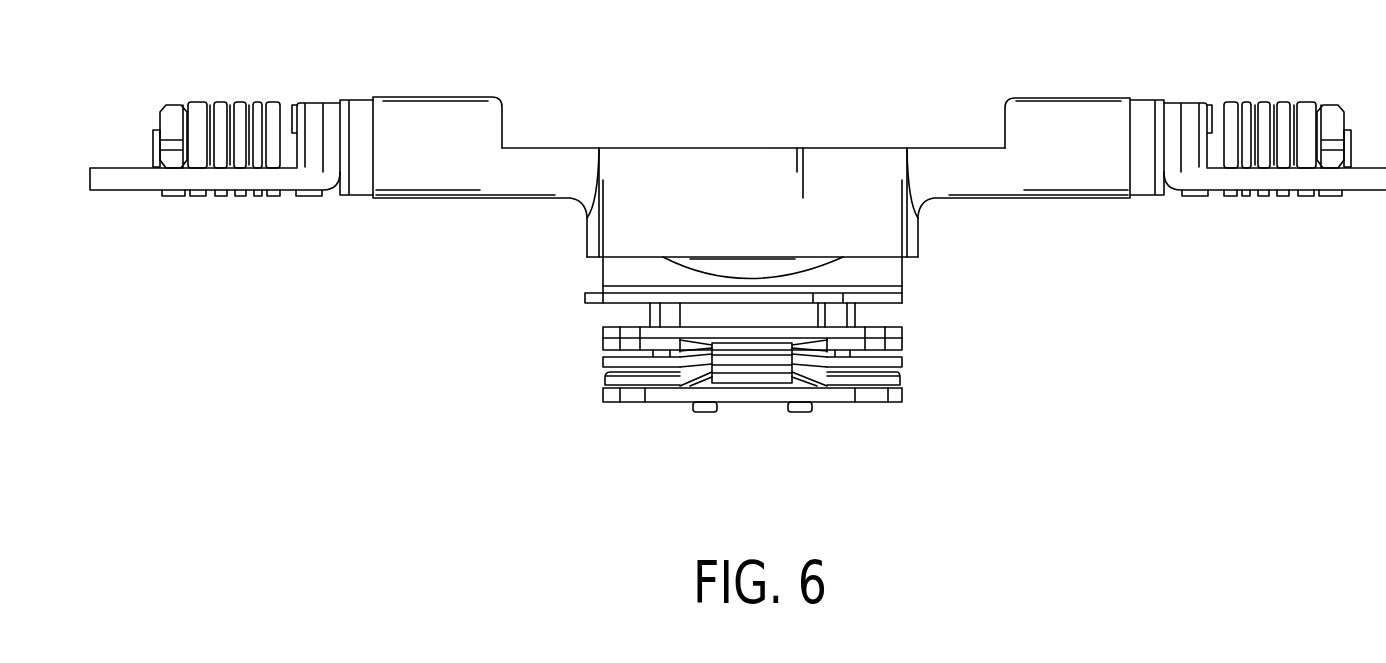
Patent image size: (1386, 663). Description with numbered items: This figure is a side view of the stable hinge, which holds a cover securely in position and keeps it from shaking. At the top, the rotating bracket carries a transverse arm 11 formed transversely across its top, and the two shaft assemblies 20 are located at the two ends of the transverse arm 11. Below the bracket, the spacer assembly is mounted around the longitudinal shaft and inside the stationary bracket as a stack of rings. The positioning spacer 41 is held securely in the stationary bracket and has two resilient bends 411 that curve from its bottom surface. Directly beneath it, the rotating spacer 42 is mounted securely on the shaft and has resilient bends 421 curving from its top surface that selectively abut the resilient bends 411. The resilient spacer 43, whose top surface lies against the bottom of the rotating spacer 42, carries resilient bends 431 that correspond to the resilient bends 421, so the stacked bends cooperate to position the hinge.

The transverse arm 11 is at (1043, 106).
The shaft assembly 20 is at (1255, 88).
The positioning spacer 41 is at (895, 345).
The resilient bend 411 is at (737, 348).
The rotating spacer 42 is at (897, 360).
The resilient bend 421 is at (726, 362).
The resilient spacer 43 is at (898, 378).
The resilient bend 431 is at (710, 377).